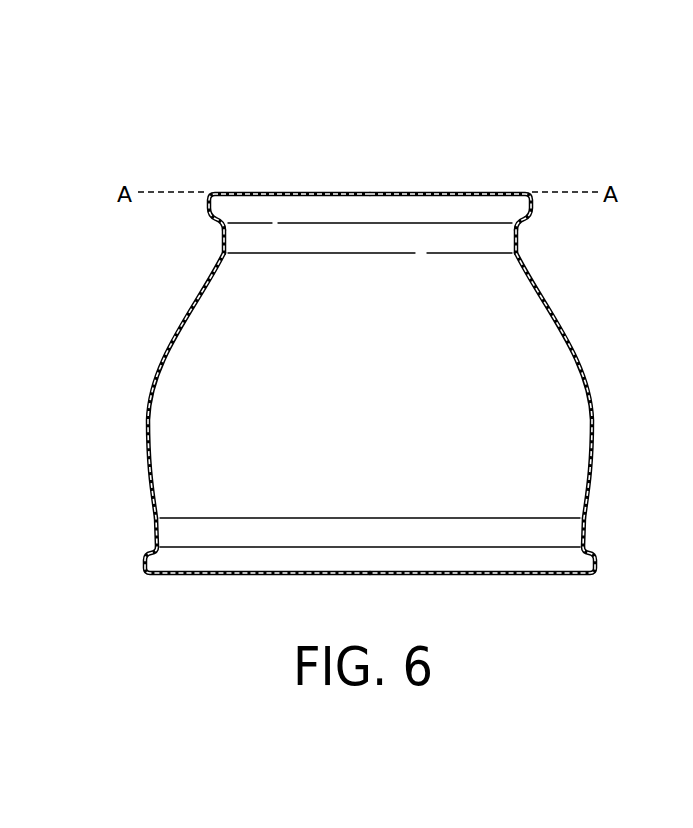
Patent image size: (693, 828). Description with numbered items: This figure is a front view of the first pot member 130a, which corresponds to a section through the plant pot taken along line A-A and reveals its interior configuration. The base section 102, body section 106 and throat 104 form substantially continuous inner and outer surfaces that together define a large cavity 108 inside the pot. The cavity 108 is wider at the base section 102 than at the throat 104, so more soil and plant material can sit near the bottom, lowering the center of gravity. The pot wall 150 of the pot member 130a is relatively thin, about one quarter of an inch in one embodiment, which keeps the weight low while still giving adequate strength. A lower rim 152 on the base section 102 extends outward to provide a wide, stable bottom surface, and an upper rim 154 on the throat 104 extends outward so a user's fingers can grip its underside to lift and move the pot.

The first pot member 130a is at (345, 118).
The base section 102 is at (585, 540).
The throat 104 is at (518, 247).
The body section 106 is at (592, 404).
The cavity 108 is at (398, 278).
The pot wall 150 is at (150, 400).
The lower rim 152 is at (143, 562).
The upper rim 154 is at (207, 203).